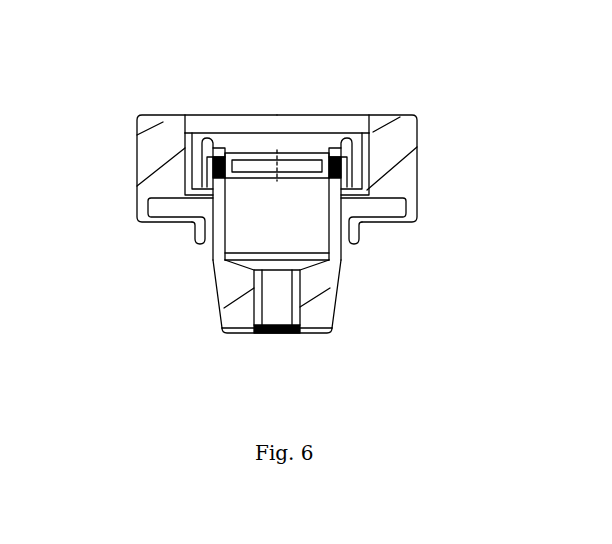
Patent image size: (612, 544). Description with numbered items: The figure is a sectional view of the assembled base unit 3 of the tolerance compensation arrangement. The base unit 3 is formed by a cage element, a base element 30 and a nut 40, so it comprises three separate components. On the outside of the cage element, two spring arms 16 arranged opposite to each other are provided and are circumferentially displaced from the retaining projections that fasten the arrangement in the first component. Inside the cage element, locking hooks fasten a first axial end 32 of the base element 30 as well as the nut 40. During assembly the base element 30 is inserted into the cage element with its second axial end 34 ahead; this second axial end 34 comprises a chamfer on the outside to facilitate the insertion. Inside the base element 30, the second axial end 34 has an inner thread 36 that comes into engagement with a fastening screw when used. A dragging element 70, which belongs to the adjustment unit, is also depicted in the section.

The base unit 3 is at (532, 36).
The dragging element 70 is at (400, 143).
The spring arms 16 is at (197, 225).
The first axial end 32 is at (213, 187).
The nut 40 is at (320, 155).
The base element 30 is at (320, 275).
The second axial end 34 is at (230, 328).
The inner thread 36 is at (280, 332).